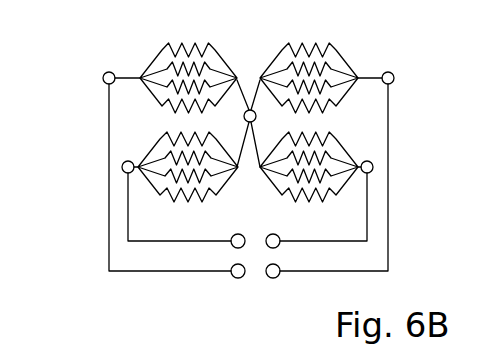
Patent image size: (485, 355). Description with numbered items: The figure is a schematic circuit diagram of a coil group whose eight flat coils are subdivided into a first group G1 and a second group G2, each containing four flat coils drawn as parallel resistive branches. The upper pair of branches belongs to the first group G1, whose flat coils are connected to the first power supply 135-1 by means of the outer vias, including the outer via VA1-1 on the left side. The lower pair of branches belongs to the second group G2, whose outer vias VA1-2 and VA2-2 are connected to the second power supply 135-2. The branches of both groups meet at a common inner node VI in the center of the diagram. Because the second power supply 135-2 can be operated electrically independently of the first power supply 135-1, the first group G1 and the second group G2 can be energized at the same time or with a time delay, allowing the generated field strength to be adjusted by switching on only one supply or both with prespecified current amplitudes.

The first group G1 is at (88, 76).
The second group G2 is at (88, 167).
The outer via VA1-1 is at (109, 72).
The outer via VA1-2 is at (388, 72).
The outer via VA2-2 is at (368, 161).
The voltage input node VI is at (249, 110).
The first power supply 135-1 is at (256, 270).
The second power supply 135-2 is at (257, 233).